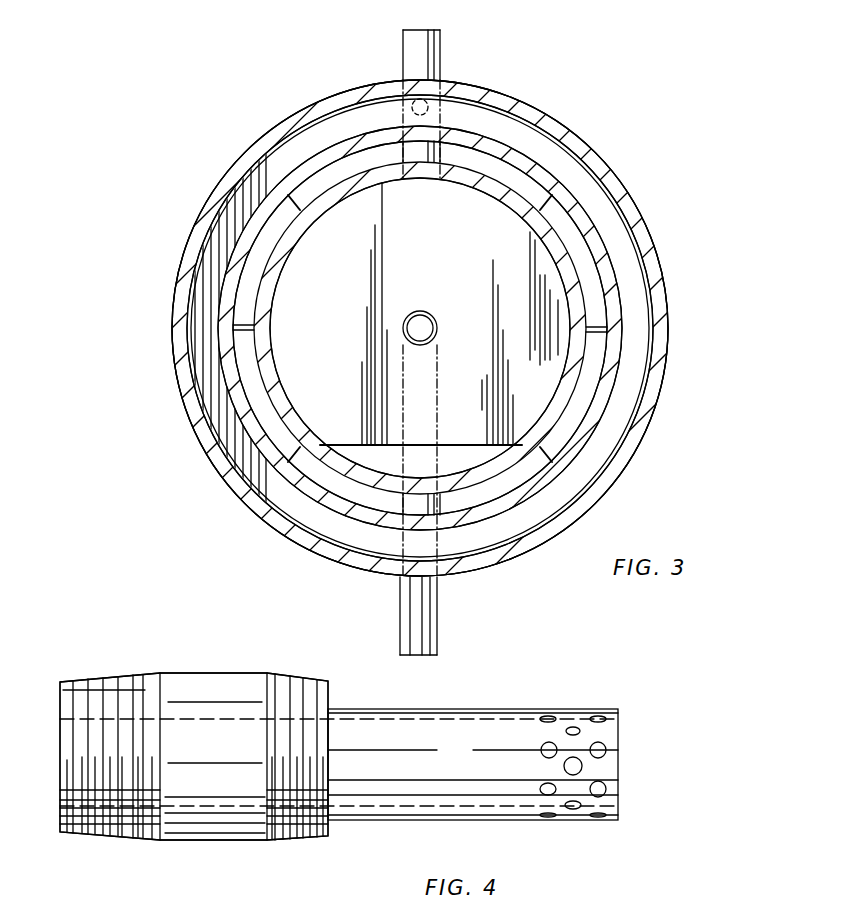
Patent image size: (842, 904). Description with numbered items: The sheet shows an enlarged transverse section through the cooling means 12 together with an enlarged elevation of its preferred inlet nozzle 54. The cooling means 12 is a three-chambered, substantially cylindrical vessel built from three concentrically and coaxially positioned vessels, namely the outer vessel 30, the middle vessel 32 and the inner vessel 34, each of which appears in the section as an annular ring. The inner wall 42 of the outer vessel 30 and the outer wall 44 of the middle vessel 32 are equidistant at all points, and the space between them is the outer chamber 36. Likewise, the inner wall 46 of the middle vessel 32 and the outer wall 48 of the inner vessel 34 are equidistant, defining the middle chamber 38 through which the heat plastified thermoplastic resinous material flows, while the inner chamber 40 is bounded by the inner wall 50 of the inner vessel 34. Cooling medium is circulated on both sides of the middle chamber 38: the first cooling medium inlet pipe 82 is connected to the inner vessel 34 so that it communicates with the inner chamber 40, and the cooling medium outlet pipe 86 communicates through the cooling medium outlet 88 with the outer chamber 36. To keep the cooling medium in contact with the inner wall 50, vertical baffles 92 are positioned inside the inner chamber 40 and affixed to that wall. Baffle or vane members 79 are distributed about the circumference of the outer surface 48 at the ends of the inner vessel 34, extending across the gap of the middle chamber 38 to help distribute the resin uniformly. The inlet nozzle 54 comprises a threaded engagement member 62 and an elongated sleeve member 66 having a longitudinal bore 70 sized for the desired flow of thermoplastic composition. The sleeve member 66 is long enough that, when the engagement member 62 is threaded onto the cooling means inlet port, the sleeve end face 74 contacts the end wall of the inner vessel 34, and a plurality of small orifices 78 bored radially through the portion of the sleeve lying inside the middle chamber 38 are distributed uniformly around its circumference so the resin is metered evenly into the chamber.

In FIG. 3, the cooling means 12 is at (232, 116).
In FIG. 3, the outer vessel 30 is at (665, 286).
In FIG. 3, the middle vessel 32 is at (590, 218).
In FIG. 3, the inner vessel 34 is at (513, 196).
In FIG. 3, the outer chamber 36 is at (303, 145).
In FIG. 3, the middle chamber 38 is at (283, 212).
In FIG. 3, the inner chamber 40 is at (280, 273).
In FIG. 3, the inner wall of outer vessel 42 is at (195, 278).
In FIG. 3, the outer wall of middle vessel 44 is at (232, 327).
In FIG. 3, the inner wall of middle vessel 46 is at (240, 370).
In FIG. 3, the outer wall of inner vessel 48 is at (265, 443).
In FIG. 3, the inner wall of inner vessel 50 is at (566, 364).
In FIG. 3, the baffle or vane members 79 is at (296, 212).
In FIG. 3, the first cooling medium inlet pipe 82 is at (400, 622).
In FIG. 3, the cooling medium outlet pipe 86 is at (420, 57).
In FIG. 3, the cooling medium outlet 88 is at (405, 96).
In FIG. 3, the vertical baffles 92 is at (462, 448).
In FIG. 4, the inlet nozzle 54 is at (213, 662).
In FIG. 4, the threaded engagement member 62 is at (113, 703).
In FIG. 4, the elongated sleeve member 66 is at (475, 708).
In FIG. 4, the longitudinal bore 70 is at (432, 763).
In FIG. 4, the sleeve end face 74 is at (620, 727).
In FIG. 4, the orifices 78 is at (604, 789).